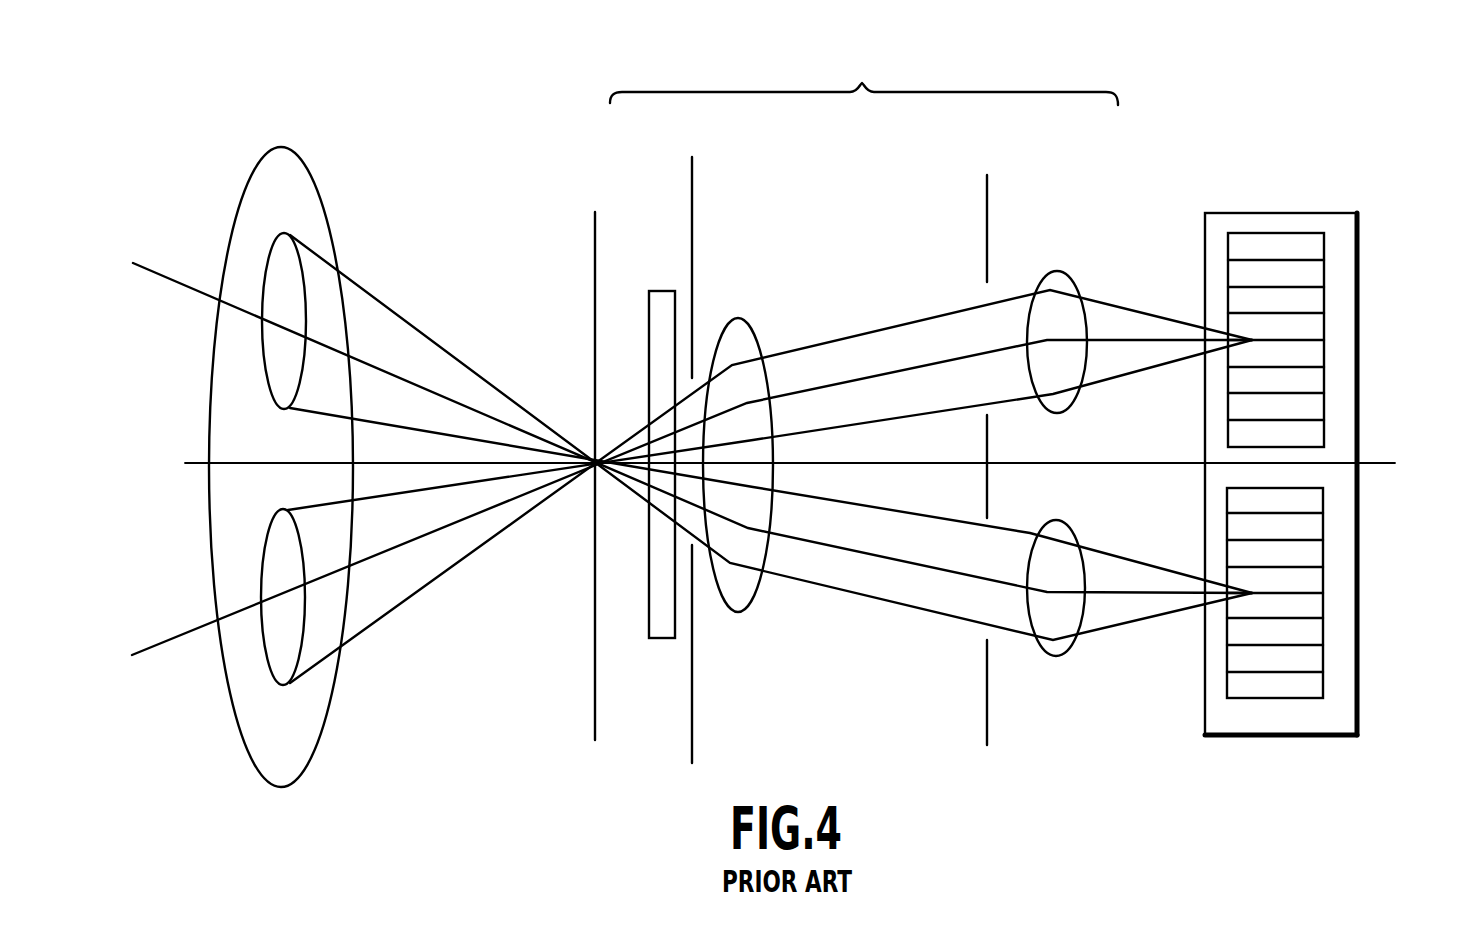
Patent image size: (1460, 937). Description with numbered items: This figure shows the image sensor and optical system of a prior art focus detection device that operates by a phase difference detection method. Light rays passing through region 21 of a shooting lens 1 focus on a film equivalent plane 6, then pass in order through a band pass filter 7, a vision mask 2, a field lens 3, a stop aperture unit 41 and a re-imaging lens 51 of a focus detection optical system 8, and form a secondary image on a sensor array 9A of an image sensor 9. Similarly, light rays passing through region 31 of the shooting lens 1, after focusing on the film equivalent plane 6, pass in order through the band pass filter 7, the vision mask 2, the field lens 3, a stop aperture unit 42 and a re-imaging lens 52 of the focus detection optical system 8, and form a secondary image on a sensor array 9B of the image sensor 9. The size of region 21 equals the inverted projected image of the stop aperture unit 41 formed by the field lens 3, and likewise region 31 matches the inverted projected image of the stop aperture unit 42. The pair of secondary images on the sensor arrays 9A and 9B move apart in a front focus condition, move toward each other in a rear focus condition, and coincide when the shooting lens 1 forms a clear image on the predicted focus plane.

The shooting lens 1 is at (290, 147).
The region of the shooting lens 31 is at (302, 265).
The region of the shooting lens 21 is at (302, 647).
The film equivalent plane 6 is at (595, 295).
The band pass filter 7 is at (657, 290).
The vision mask 2 is at (692, 207).
The field lens 3 is at (742, 318).
The focus detection optical system 8 is at (864, 70).
The stop aperture unit 41 is at (983, 290).
The stop aperture unit 42 is at (985, 633).
The re-imaging lens 51 is at (1060, 272).
The re-imaging lens 52 is at (1060, 658).
The image sensor 9 is at (1270, 213).
The sensor array 9A is at (1325, 348).
The sensor array 9B is at (1325, 552).